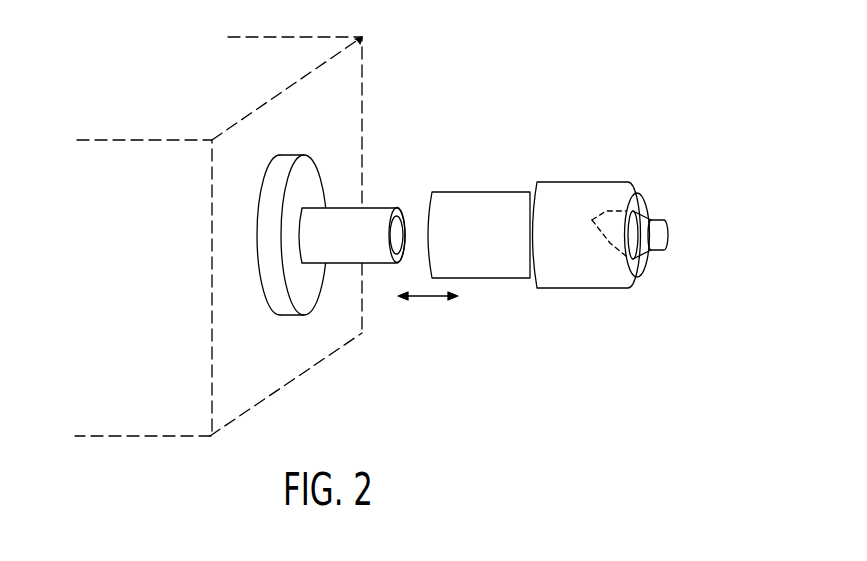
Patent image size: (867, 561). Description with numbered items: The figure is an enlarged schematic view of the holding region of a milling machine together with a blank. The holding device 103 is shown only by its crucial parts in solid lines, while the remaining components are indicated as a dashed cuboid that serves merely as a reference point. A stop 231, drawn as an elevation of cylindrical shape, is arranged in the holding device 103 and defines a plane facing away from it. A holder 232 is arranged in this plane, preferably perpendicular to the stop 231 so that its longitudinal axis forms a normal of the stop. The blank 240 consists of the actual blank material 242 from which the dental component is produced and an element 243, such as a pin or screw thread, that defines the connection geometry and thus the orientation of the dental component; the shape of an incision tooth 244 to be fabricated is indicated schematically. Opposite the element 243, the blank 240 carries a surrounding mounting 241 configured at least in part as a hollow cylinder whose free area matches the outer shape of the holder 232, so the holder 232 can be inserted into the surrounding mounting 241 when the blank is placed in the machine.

The holding device 103 is at (513, 72).
The stop 231 is at (305, 277).
The holder 232 is at (338, 218).
The blank 240 is at (586, 222).
The surrounding mounting 241 is at (510, 205).
The blank material 242 is at (553, 282).
The element 243 is at (668, 235).
The incision tooth 244 is at (608, 237).